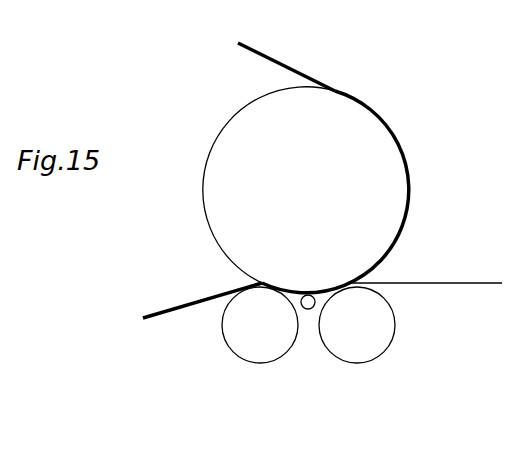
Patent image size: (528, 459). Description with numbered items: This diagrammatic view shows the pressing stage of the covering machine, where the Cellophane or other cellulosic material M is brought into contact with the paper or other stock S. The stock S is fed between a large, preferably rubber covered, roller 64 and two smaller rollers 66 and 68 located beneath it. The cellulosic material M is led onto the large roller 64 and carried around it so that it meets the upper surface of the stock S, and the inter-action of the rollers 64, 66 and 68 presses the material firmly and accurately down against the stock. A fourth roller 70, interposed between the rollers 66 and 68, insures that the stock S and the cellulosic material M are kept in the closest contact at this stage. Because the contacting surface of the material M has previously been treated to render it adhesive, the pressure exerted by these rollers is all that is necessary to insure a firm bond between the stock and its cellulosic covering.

The roller 64 is at (392, 186).
The roller 66 is at (260, 325).
The roller 68 is at (357, 325).
The fourth roller 70 is at (308, 309).
The cellulosic material M is at (332, 55).
The stock S is at (171, 318).